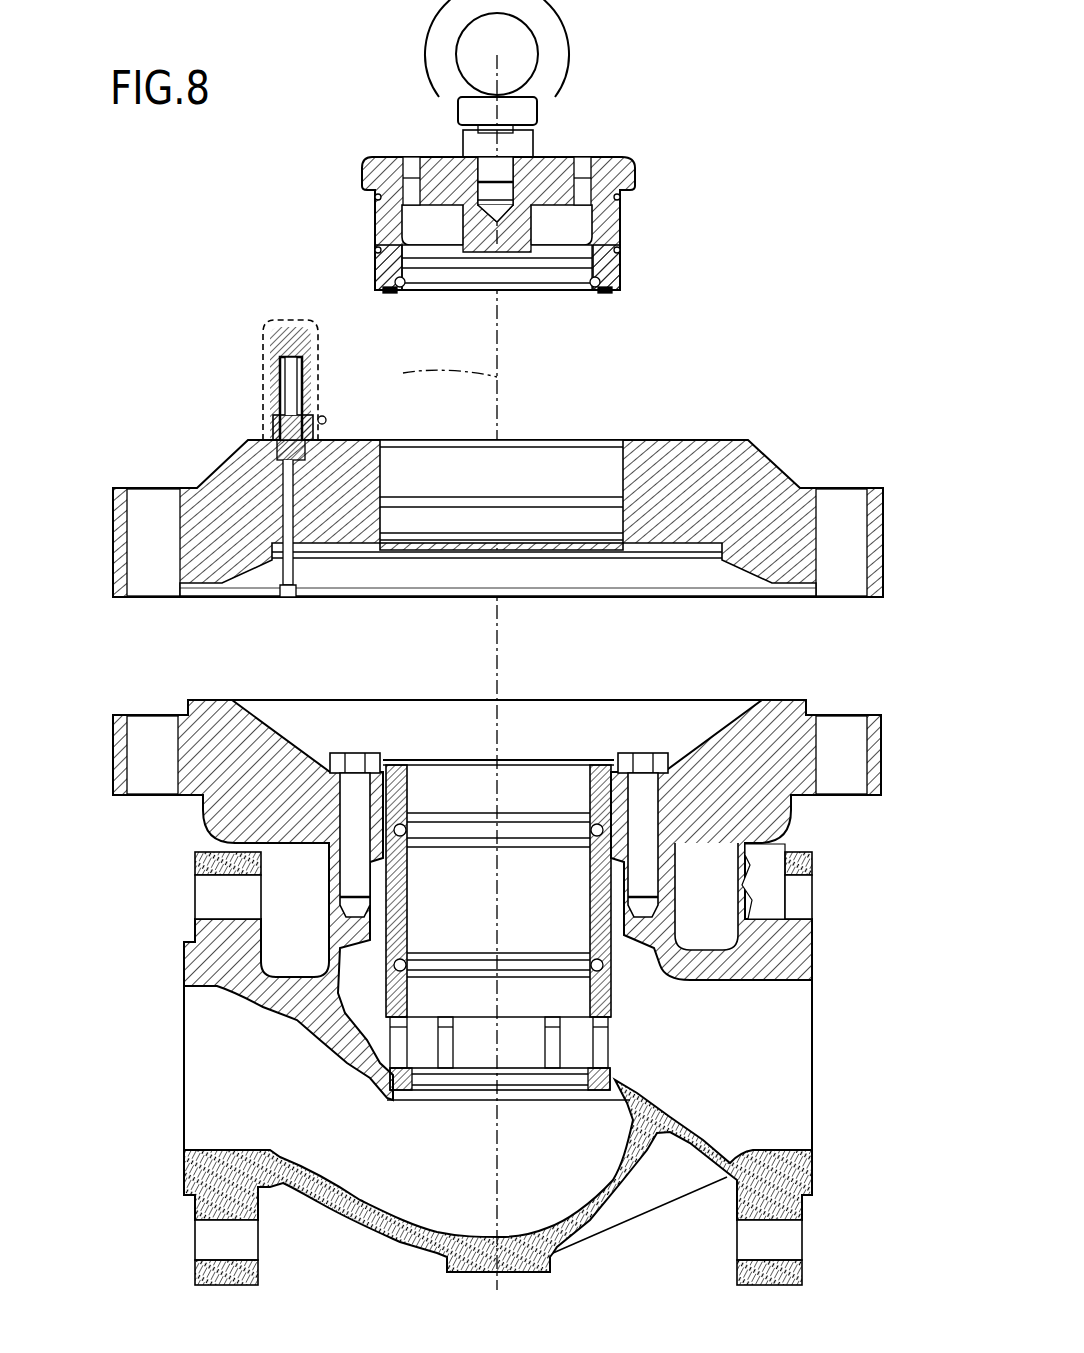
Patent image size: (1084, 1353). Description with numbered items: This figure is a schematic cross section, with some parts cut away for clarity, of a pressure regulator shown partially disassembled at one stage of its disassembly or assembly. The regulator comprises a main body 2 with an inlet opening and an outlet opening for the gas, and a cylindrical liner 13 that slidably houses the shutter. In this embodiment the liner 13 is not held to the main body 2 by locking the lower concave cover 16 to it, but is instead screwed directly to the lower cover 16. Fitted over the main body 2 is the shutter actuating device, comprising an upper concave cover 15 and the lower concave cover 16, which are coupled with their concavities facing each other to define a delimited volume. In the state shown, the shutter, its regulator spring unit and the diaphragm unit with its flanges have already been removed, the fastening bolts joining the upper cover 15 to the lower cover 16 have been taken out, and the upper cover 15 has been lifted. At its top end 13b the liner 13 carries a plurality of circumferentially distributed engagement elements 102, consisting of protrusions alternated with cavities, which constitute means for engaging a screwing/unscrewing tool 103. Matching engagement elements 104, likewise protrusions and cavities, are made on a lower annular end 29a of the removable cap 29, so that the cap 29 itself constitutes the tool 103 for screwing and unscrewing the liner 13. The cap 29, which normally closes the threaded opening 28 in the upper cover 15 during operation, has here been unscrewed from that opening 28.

The main body 2 is at (712, 976).
The cylindrical liner 13 is at (614, 1000).
The top end 13b is at (583, 780).
The upper concave cover 15 is at (228, 493).
The lower concave cover 16 is at (222, 757).
The opening 28 is at (598, 472).
The removable cap 29 is at (368, 152).
The lower annular end 29a is at (625, 282).
The engagement elements 102 is at (397, 752).
The screwing/unscrewing tool 103 is at (612, 150).
The engagement elements 104 is at (393, 290).